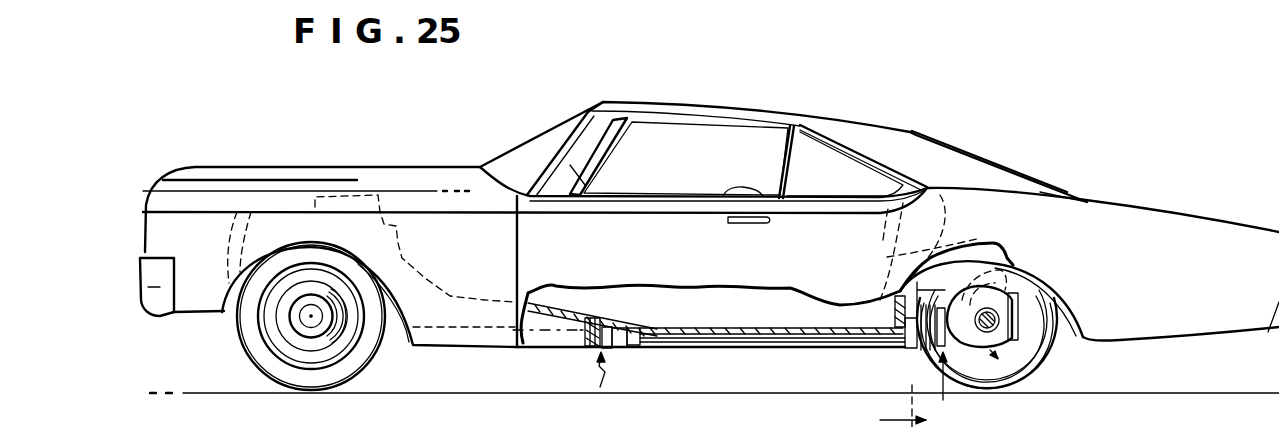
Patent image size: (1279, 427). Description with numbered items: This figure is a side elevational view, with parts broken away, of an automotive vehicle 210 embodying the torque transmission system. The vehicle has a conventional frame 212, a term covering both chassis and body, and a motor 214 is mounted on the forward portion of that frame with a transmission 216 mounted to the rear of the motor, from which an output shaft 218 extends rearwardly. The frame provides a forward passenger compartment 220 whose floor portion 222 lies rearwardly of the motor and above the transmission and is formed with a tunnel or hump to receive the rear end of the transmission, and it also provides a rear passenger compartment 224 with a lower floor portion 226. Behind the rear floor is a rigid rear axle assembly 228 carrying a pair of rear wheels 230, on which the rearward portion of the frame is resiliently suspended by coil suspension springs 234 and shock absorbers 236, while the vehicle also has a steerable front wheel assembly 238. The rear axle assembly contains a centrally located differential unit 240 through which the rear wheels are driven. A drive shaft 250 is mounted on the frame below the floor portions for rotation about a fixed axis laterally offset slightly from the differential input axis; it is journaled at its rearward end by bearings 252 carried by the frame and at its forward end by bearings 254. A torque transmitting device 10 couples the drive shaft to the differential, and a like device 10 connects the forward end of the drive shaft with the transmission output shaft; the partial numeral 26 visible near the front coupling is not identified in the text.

The vehicle 210 is at (930, 116).
The frame 212 is at (1005, 202).
The motor 214 is at (413, 241).
The transmission 216 is at (585, 268).
The output shaft 218 is at (584, 344).
The forward passenger compartment 220 is at (693, 322).
The floor portion 222 is at (681, 287).
The rear passenger compartment 224 is at (977, 239).
The lower floor portion 226 is at (740, 336).
The rear axle assembly 228 is at (1046, 374).
The rear wheels 230 is at (1012, 383).
The coil suspension springs 234 is at (1027, 261).
The shock absorbers 236 is at (1012, 302).
The steerable front wheel assembly 238 is at (250, 362).
The differential unit 240 is at (1003, 323).
The drive shaft 250 is at (826, 338).
The bearings 252 is at (912, 350).
The bearings 254 is at (633, 347).
The coupling discs 26 is at (943, 291).
The torque transmitting device 10 is at (775, 384).